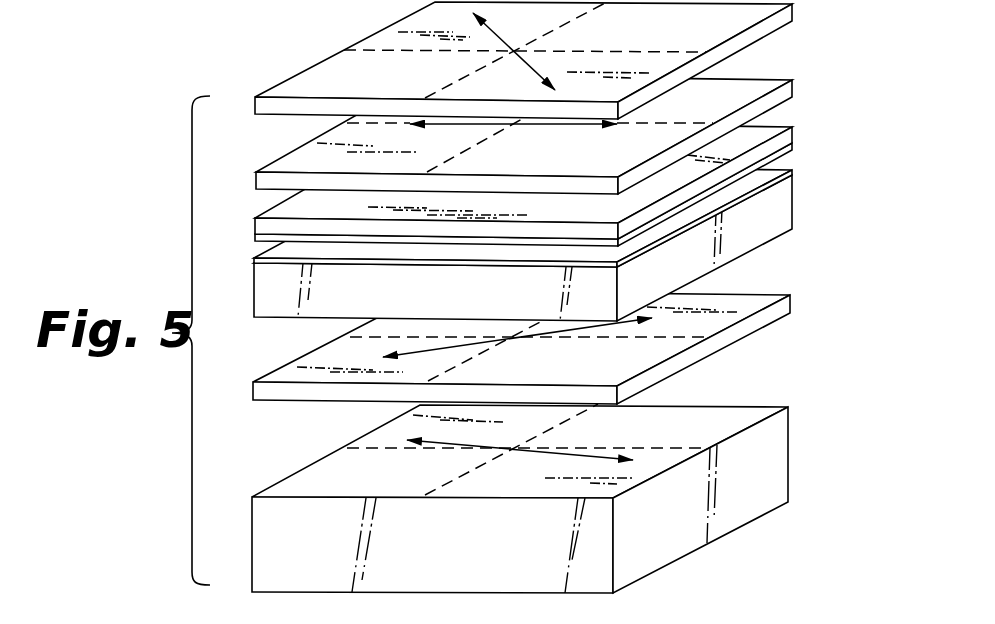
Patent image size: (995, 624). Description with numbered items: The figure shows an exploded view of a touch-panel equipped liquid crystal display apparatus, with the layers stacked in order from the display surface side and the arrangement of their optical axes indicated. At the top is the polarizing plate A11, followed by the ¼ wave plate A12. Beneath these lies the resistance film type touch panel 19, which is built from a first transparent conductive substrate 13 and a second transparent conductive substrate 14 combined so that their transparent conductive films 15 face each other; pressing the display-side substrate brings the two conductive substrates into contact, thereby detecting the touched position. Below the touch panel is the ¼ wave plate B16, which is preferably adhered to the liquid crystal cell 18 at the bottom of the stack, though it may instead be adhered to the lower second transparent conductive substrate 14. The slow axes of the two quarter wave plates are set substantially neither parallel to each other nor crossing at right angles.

The polarizing plate A A11 is at (793, 13).
The ¼ wave plate A A12 is at (793, 82).
The first transparent conductive substrate 13 is at (793, 128).
The second transparent conductive substrate 14 is at (786, 198).
The transparent conductive films 15 is at (252, 232).
The touch panel 19 is at (576, 179).
The ¼ wave plate B B16 is at (788, 298).
The liquid crystal cell 18 is at (773, 453).